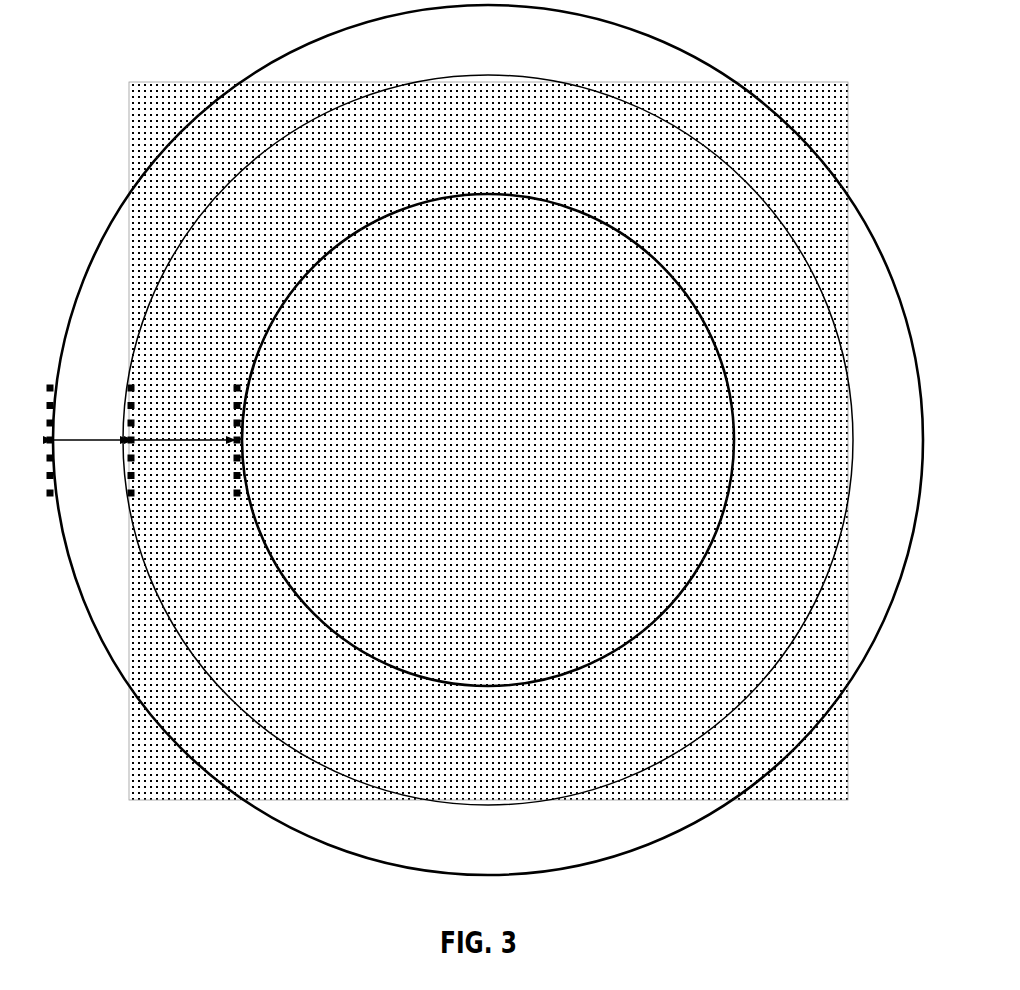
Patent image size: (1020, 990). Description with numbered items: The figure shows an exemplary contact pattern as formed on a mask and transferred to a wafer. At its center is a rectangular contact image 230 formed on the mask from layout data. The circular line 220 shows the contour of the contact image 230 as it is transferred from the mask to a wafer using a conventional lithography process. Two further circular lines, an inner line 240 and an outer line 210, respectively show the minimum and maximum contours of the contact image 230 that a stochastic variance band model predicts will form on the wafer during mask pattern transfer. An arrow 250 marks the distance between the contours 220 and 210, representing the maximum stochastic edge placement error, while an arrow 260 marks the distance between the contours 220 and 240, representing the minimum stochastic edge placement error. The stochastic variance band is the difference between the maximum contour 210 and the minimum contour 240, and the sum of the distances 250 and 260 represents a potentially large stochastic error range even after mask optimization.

The circular line (maximum contour) 210 is at (865, 216).
The circular line (conventional transfer contour) 220 is at (758, 673).
The rectangular contact image 230 is at (803, 81).
The circular line (minimum contour) 240 is at (435, 197).
The arrow (maximum stochastic EPE distance) 250 is at (116, 440).
The arrow (minimum stochastic EPE distance) 260 is at (192, 443).